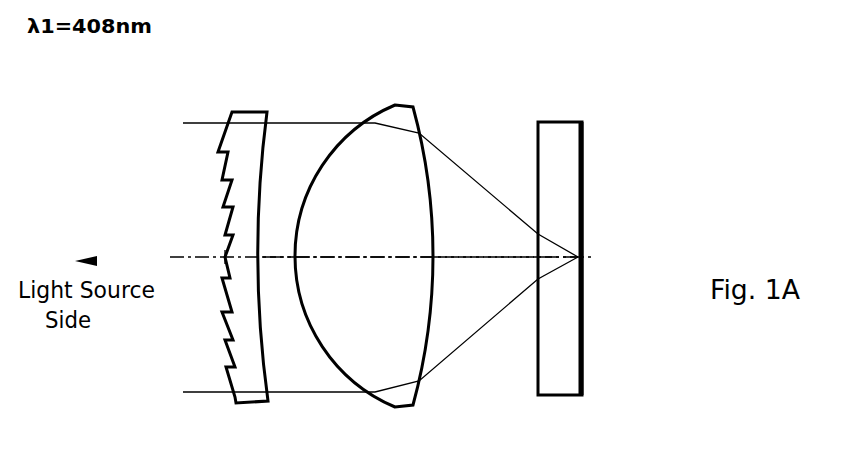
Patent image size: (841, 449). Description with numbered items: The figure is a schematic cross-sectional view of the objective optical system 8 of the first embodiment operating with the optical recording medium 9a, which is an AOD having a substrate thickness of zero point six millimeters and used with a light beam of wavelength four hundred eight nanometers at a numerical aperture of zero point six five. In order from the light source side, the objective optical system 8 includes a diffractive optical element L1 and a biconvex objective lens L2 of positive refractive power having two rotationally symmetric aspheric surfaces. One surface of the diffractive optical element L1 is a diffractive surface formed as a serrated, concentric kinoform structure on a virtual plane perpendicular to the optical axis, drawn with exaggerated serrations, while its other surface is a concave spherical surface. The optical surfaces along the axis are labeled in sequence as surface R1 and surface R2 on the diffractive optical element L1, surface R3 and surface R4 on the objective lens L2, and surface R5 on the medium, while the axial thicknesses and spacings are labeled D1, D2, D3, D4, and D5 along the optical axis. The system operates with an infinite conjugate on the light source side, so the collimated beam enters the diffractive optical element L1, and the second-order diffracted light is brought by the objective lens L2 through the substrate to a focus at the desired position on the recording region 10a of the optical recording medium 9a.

The objective optical system 8 is at (325, 70).
The optical recording medium 9a is at (592, 106).
The recording region 10a is at (585, 178).
The diffractive optical element L1 is at (246, 110).
The objective lens L2 is at (402, 107).
The thickness of first lens D1 is at (225, 256).
The air gap between first and second lens D2 is at (283, 256).
The thickness of second lens D3 is at (369, 256).
The distance from second lens to disc D4 is at (465, 256).
The thickness of transparent substrate D5 is at (556, 256).
The first surface of first lens R1 is at (226, 259).
The second surface of first lens R2 is at (263, 339).
The first surface of second lens R3 is at (298, 267).
The second surface of second lens R4 is at (434, 259).
The surface of transparent substrate R5 is at (537, 340).